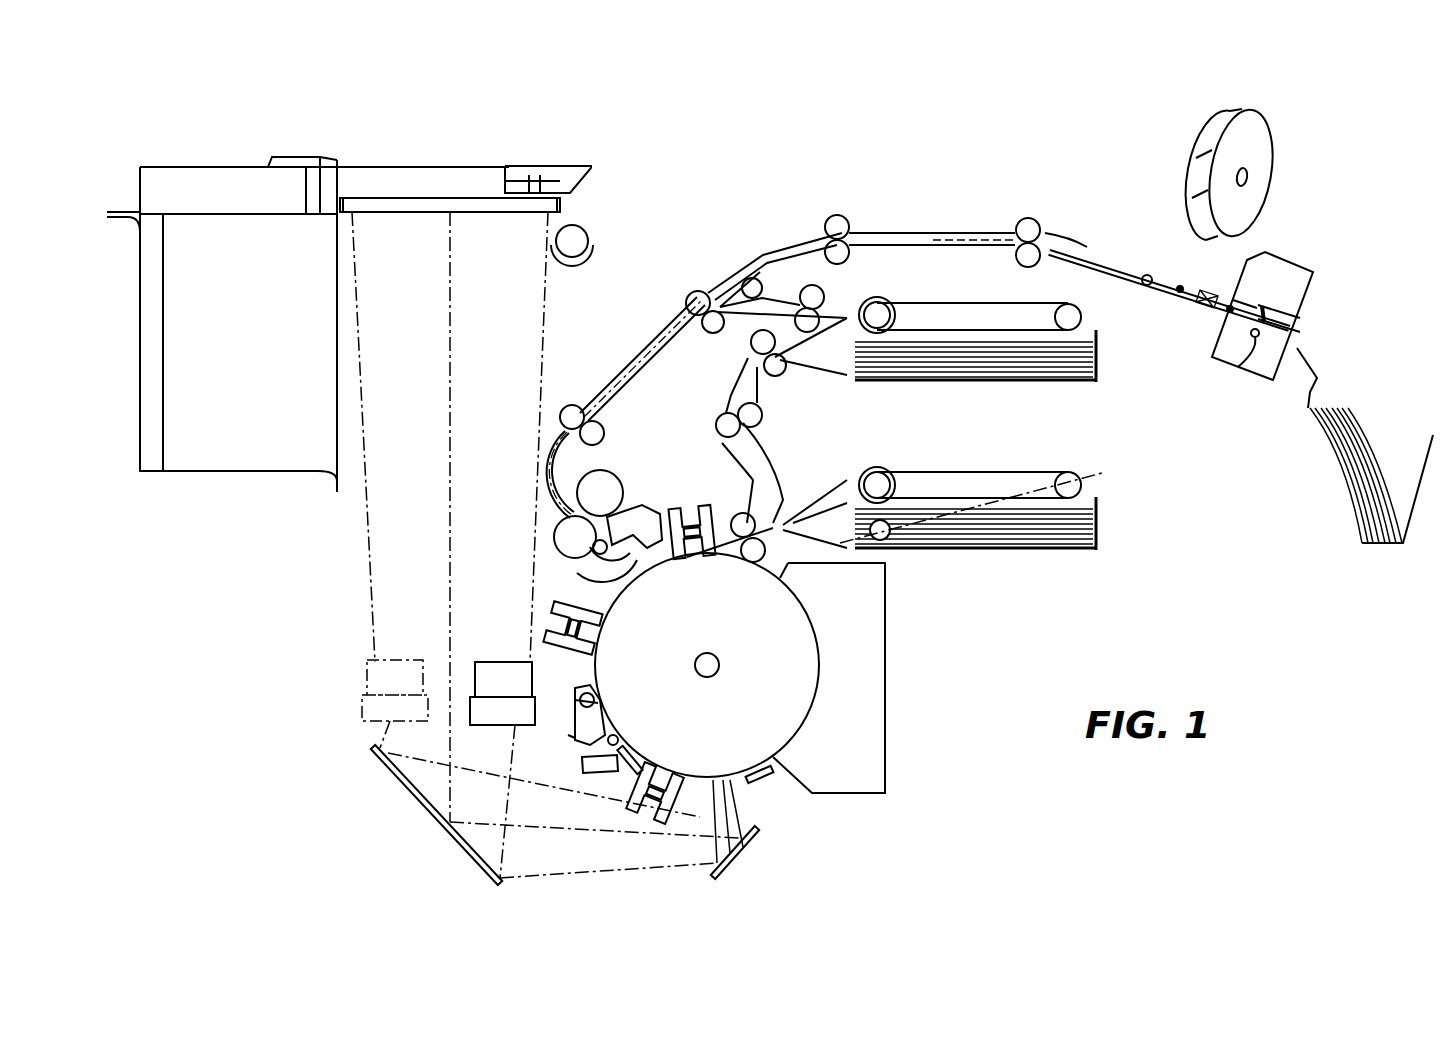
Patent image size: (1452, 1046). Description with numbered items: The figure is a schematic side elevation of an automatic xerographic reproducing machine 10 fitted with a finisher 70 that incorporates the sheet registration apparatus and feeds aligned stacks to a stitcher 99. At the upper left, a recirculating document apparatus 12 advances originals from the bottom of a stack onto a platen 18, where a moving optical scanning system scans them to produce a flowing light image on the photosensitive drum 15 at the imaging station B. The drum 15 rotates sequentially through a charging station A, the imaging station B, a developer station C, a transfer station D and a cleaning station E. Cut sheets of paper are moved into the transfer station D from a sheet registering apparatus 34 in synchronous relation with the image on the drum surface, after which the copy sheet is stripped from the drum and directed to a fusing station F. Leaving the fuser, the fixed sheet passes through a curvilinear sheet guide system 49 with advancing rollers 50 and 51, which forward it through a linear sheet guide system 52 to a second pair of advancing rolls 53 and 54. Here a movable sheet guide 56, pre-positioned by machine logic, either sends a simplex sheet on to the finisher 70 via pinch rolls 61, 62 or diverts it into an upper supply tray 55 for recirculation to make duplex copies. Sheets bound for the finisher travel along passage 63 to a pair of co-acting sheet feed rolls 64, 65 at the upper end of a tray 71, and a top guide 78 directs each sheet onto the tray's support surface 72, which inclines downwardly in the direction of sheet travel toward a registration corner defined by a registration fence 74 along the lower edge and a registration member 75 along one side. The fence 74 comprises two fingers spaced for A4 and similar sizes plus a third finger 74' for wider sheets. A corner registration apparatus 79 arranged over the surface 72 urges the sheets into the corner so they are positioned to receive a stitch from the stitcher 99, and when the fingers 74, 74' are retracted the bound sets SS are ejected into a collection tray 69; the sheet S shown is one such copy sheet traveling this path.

The automatic xerographic reproducing machine 10 is at (638, 226).
The recirculating document apparatus 12 is at (219, 143).
The photosensitive drum 15 is at (795, 732).
The platen 18 is at (400, 204).
The sheet registering apparatus 34 is at (805, 486).
The curvilinear sheet guide system 49 is at (548, 434).
The advancing roller 50 is at (559, 415).
The advancing roller 51 is at (604, 433).
The linear sheet guide system 52 is at (590, 391).
The advancing roll 53 is at (685, 306).
The advancing roll 54 is at (712, 334).
The upper supply tray 55 is at (1004, 397).
The movable sheet guide 56 is at (679, 286).
The pinch roll 61 is at (840, 216).
The pinch roll 62 is at (824, 241).
The passage 63 is at (942, 232).
The sheet feed roll 64 is at (1028, 218).
The sheet feed roll 65 is at (1016, 259).
The collection tray 69 is at (1358, 530).
The finisher 70 is at (1150, 210).
The tray 71 is at (1103, 281).
The support surface 72 is at (1146, 290).
The registration fence 74 is at (1308, 302).
The third finger 74' is at (1226, 367).
The registration member 75 is at (1180, 286).
The top guide 78 is at (1064, 238).
The corner registration apparatus 79 is at (1226, 263).
The stitcher 99 is at (1305, 243).
The charging station A is at (686, 812).
The imaging station B is at (762, 809).
The developer station C is at (845, 617).
The transfer station D is at (684, 494).
The cleaning station E is at (557, 684).
The fusing station F is at (540, 522).
The sheet S is at (1101, 258).
The bound sets SS is at (1368, 438).